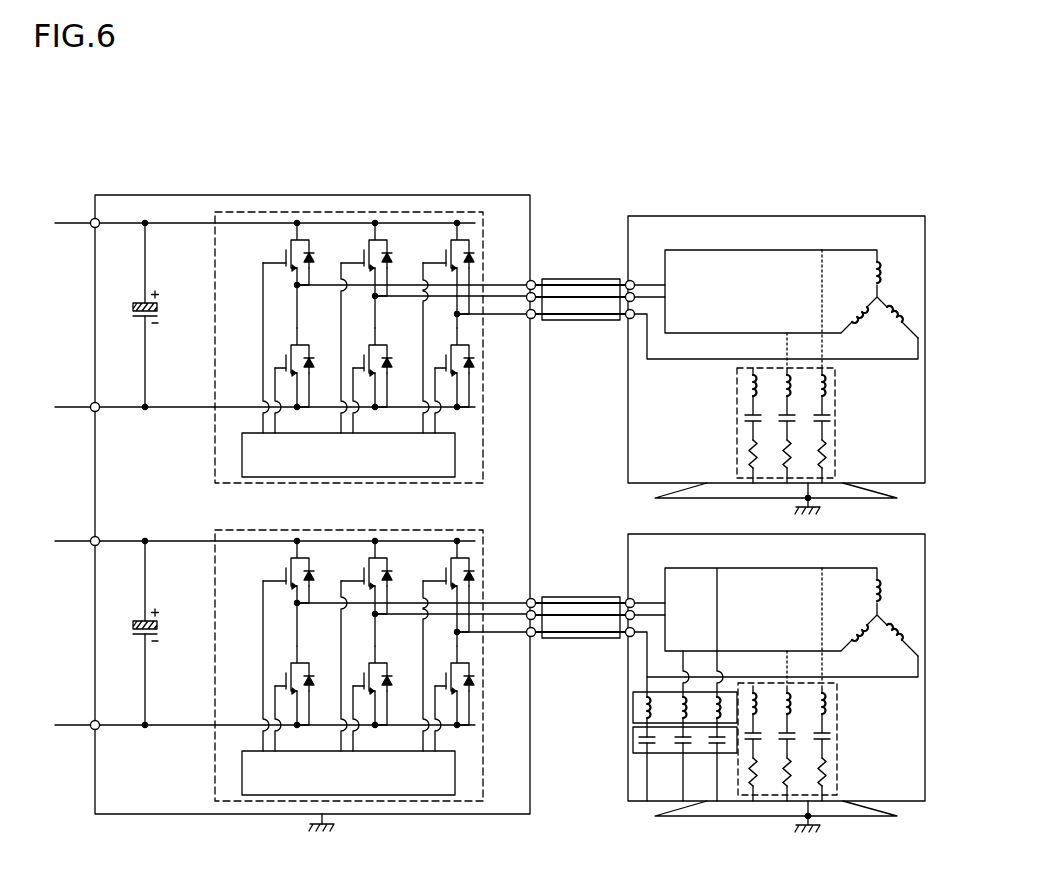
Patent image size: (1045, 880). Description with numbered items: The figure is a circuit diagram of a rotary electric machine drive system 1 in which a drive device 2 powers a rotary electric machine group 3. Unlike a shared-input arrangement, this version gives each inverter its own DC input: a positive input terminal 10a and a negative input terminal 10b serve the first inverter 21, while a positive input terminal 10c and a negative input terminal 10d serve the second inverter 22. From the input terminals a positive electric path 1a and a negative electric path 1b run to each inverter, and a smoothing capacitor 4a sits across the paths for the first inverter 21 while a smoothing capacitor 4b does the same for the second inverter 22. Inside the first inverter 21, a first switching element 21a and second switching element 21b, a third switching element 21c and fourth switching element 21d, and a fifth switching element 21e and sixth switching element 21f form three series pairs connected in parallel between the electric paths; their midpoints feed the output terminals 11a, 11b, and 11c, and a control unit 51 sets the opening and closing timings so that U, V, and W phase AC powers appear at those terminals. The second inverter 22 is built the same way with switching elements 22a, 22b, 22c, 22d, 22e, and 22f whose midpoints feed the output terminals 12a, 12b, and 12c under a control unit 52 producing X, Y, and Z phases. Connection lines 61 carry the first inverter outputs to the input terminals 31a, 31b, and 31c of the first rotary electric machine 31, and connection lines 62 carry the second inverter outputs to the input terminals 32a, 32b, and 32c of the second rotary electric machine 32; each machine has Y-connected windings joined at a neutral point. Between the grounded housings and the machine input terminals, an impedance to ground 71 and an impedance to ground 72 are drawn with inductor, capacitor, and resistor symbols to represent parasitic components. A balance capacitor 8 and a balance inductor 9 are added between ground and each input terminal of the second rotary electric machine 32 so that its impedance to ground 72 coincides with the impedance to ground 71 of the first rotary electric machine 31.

The rotary electric machine drive system 1 is at (631, 172).
The drive device 2 is at (488, 195).
The rotary electric machine group 3 is at (840, 213).
The positive electric path 1a is at (169, 225).
The negative electric path 1b is at (169, 409).
The smoothing capacitor 4a is at (140, 316).
The smoothing capacitor 4b is at (132, 633).
The balance capacitor 8 is at (655, 743).
The balance inductor 9 is at (655, 709).
The positive input terminal 10a is at (94, 219).
The negative input terminal 10b is at (94, 403).
The positive input terminal 10c is at (94, 537).
The negative input terminal 10d is at (94, 721).
The output terminal 11a is at (537, 282).
The output terminal 11b is at (527, 318).
The output terminal 11c is at (541, 318).
The output terminal 12a is at (539, 600).
The output terminal 12b is at (527, 636).
The output terminal 12c is at (541, 636).
The first inverter 21 is at (482, 243).
The first switching element 21a is at (288, 238).
The second switching element 21b is at (366, 238).
The third switching element 21c is at (448, 238).
The fourth switching element 21d is at (287, 360).
The fifth switching element 21e is at (365, 360).
The sixth switching element 21f is at (447, 360).
The second inverter 22 is at (373, 648).
The first switching element 22a is at (276, 551).
The second switching element 22b is at (355, 556).
The third switching element 22c is at (436, 565).
The fourth switching element 22d is at (267, 665).
The fifth switching element 22e is at (345, 671).
The sixth switching element 22f is at (427, 680).
The first rotary electric machine 31 is at (905, 216).
The input terminal 31a is at (643, 282).
The input terminal 31b is at (626, 318).
The input terminal 31c is at (684, 305).
The second rotary electric machine 32 is at (759, 661).
The input terminal 32a is at (780, 612).
The input terminal 32b is at (610, 643).
The input terminal 32c is at (774, 634).
The control unit 51 is at (455, 453).
The control unit 52 is at (381, 688).
The connection lines 61 is at (588, 279).
The connection lines 62 is at (593, 597).
The impedance to ground 71 is at (836, 439).
The impedance to ground 72 is at (819, 742).